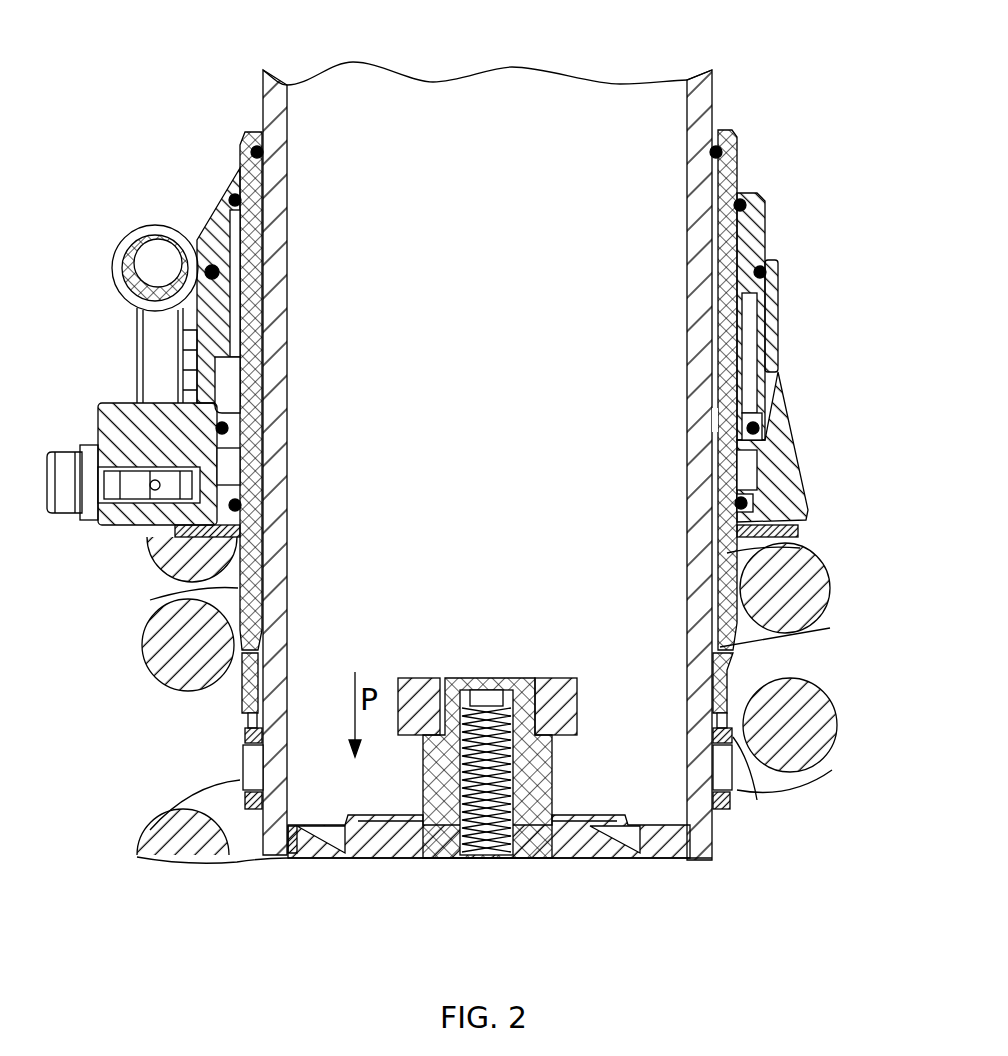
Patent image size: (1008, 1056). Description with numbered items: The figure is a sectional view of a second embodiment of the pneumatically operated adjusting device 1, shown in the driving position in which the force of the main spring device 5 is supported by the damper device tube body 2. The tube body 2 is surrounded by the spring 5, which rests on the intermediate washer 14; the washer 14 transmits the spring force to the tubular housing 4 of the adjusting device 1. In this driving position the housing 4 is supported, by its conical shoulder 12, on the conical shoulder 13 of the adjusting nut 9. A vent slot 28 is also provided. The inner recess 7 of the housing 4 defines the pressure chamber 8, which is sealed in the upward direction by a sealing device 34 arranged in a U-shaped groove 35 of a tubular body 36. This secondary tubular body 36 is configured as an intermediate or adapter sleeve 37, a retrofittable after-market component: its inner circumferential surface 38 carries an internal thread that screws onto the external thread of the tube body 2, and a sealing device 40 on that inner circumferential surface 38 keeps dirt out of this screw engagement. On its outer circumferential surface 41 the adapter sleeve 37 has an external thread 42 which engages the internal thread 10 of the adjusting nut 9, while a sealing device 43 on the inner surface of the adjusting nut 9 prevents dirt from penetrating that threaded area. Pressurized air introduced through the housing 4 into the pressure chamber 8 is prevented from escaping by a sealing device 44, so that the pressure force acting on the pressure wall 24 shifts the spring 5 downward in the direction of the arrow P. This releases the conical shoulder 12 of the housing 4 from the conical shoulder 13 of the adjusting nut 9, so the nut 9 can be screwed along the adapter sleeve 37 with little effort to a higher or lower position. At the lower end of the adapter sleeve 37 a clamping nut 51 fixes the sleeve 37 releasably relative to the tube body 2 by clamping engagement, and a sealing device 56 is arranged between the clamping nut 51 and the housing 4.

The adjusting device 1 is at (788, 94).
The damper device tube body 2 is at (712, 842).
The housing 4 is at (772, 437).
The main spring device 5 is at (200, 850).
The inner recess 7 is at (222, 462).
The pressure chamber 8 is at (750, 475).
The adjusting nut 9 is at (762, 235).
The internal thread 10 is at (254, 326).
The conical shoulder 12 is at (768, 338).
The conical shoulder 13 is at (762, 312).
The intermediate washer 14 is at (800, 532).
The pressure wall 24 is at (745, 500).
The vent slot 28 is at (782, 377).
The sealing device 34 is at (705, 418).
The U-shaped groove 35 is at (755, 420).
The tubular body 36 is at (738, 172).
The adapter sleeve 37 is at (258, 250).
The inner circumferential surface 38 is at (262, 370).
The sealing device 40 is at (266, 152).
The outer circumferential surface 41 is at (742, 150).
The external thread 42 is at (230, 330).
The sealing device 43 is at (750, 207).
The sealing device 44 is at (237, 503).
The clamping nut 51 is at (738, 737).
The sealing device 56 is at (740, 698).